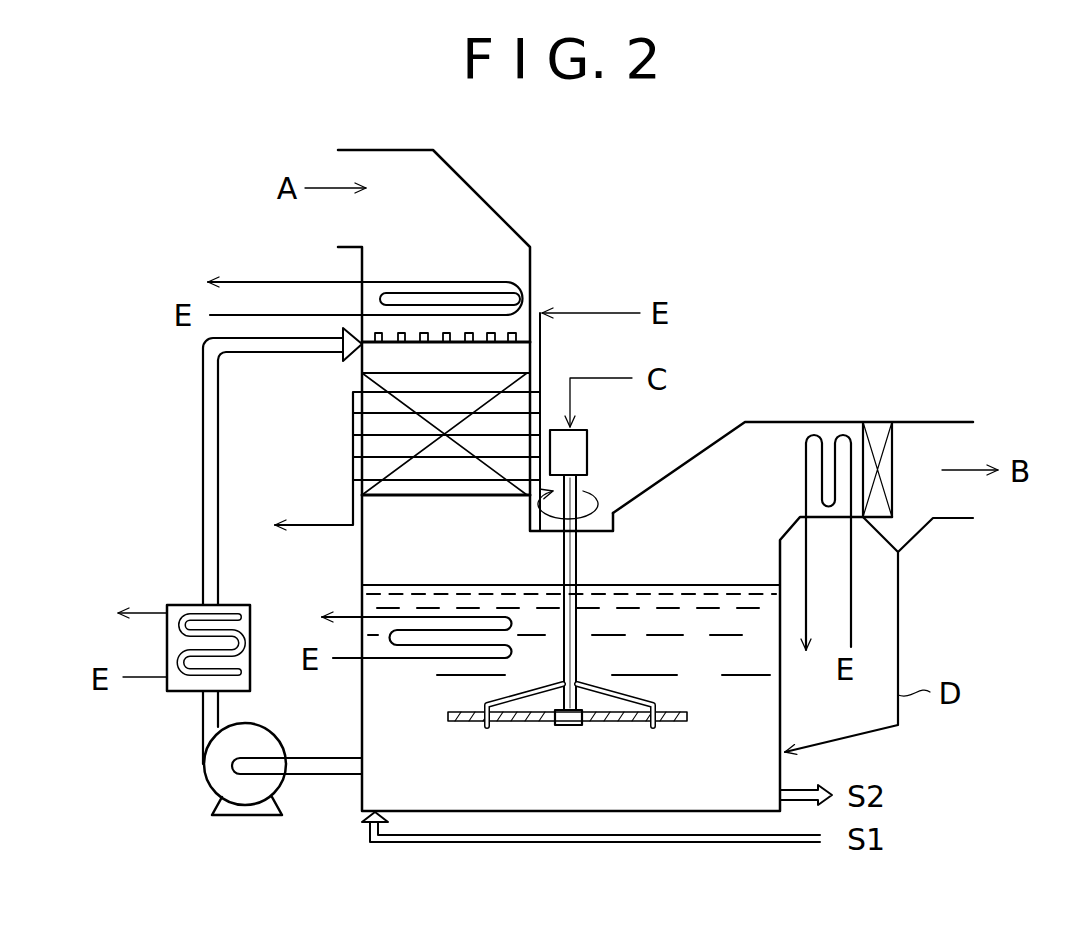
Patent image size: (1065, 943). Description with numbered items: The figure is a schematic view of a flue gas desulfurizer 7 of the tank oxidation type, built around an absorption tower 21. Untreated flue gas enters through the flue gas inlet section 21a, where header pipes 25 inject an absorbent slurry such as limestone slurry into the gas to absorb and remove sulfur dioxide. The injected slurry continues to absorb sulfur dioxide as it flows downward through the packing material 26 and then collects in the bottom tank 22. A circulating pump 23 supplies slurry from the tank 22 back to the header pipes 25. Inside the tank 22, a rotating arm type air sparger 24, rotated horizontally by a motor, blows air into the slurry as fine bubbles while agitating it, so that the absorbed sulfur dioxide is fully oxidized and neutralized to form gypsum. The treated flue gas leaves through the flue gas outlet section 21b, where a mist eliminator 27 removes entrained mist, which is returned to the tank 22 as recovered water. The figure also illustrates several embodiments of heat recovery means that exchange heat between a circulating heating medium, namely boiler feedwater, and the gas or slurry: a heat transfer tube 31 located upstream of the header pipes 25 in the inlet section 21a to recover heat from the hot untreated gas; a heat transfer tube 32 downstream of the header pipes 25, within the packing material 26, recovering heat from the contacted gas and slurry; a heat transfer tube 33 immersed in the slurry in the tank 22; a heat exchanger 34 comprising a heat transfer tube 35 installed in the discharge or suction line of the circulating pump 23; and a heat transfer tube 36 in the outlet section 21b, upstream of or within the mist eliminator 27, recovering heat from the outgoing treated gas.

The flue gas desulfurizer 7 is at (813, 268).
The absorption tower 21 is at (362, 550).
The flue gas inlet section 21a is at (372, 357).
The flue gas outlet section 21b is at (790, 421).
The tank 22 is at (424, 813).
The circulating pump 23 is at (207, 785).
The rotating arm type air sparger 24 is at (590, 743).
The header pipes 25 is at (390, 333).
The packing material 26 is at (372, 468).
The mist eliminator 27 is at (882, 420).
The heat transfer tube 31 is at (471, 282).
The heat transfer tube 32 is at (478, 390).
The heat transfer tube 33 is at (400, 660).
The heat exchanger 34 is at (182, 604).
The heat transfer tube 35 is at (183, 692).
The heat transfer tube 36 is at (806, 490).